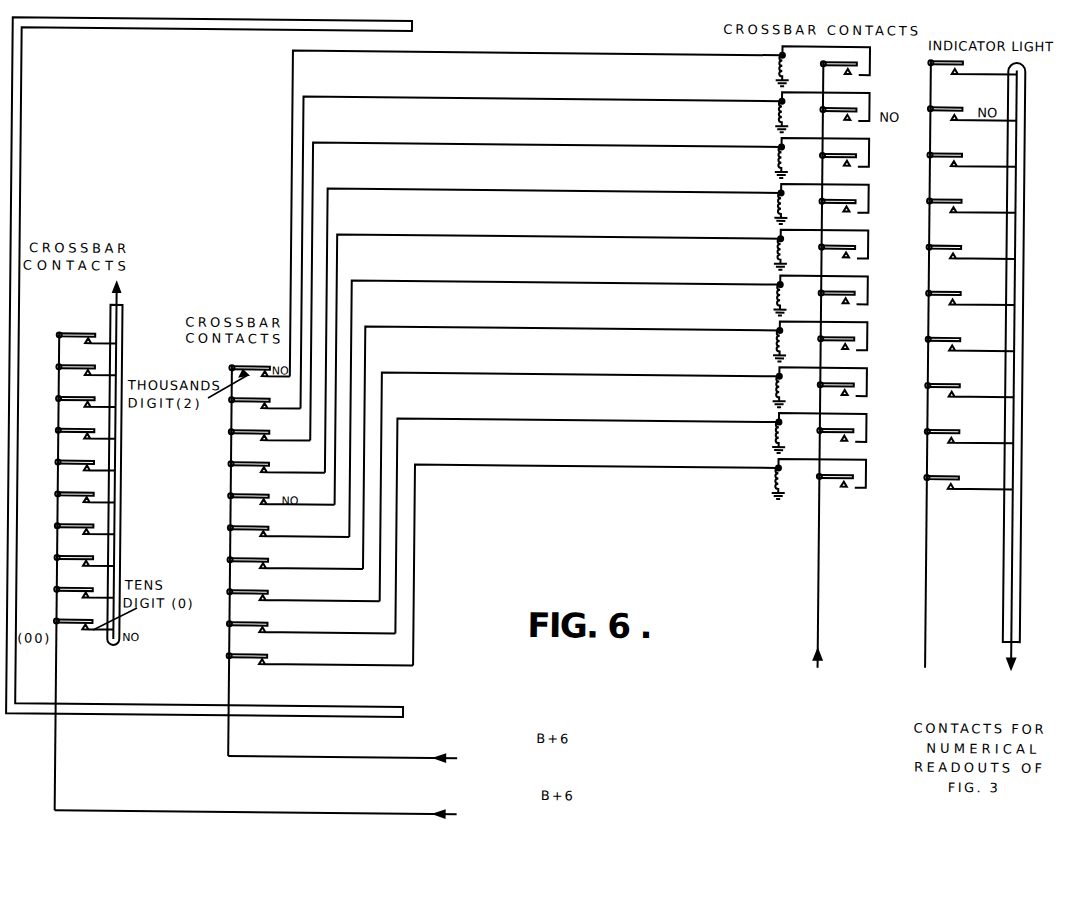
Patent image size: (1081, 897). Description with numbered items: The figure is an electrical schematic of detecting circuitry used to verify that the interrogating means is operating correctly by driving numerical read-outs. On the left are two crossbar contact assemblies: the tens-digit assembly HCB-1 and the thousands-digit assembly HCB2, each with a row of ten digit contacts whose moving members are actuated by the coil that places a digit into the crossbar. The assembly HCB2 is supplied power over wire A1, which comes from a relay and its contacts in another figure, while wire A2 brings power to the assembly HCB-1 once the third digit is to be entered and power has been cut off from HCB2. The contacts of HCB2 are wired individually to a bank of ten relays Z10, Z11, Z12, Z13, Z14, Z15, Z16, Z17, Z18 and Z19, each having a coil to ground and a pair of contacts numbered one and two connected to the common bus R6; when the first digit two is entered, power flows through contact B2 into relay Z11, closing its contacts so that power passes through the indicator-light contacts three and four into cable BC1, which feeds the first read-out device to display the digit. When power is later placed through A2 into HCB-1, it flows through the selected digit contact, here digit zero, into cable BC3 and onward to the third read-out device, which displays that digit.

The relay Z10 is at (806, 66).
The relay Z11 is at (805, 112).
The relay Z12 is at (805, 158).
The relay Z13 is at (804, 204).
The relay Z14 is at (804, 249).
The relay Z15 is at (803, 295).
The relay Z16 is at (803, 341).
The relay Z17 is at (803, 387).
The relay Z18 is at (802, 433).
The relay Z19 is at (802, 479).
The contact assembly HCB-1 is at (71, 561).
The contact assembly HCB2 is at (306, 554).
The cable BC3 is at (148, 455).
The cable BC1 is at (1004, 388).
The relay contact bus R6 is at (828, 384).
The wire A1 is at (420, 759).
The wire A2 is at (338, 813).